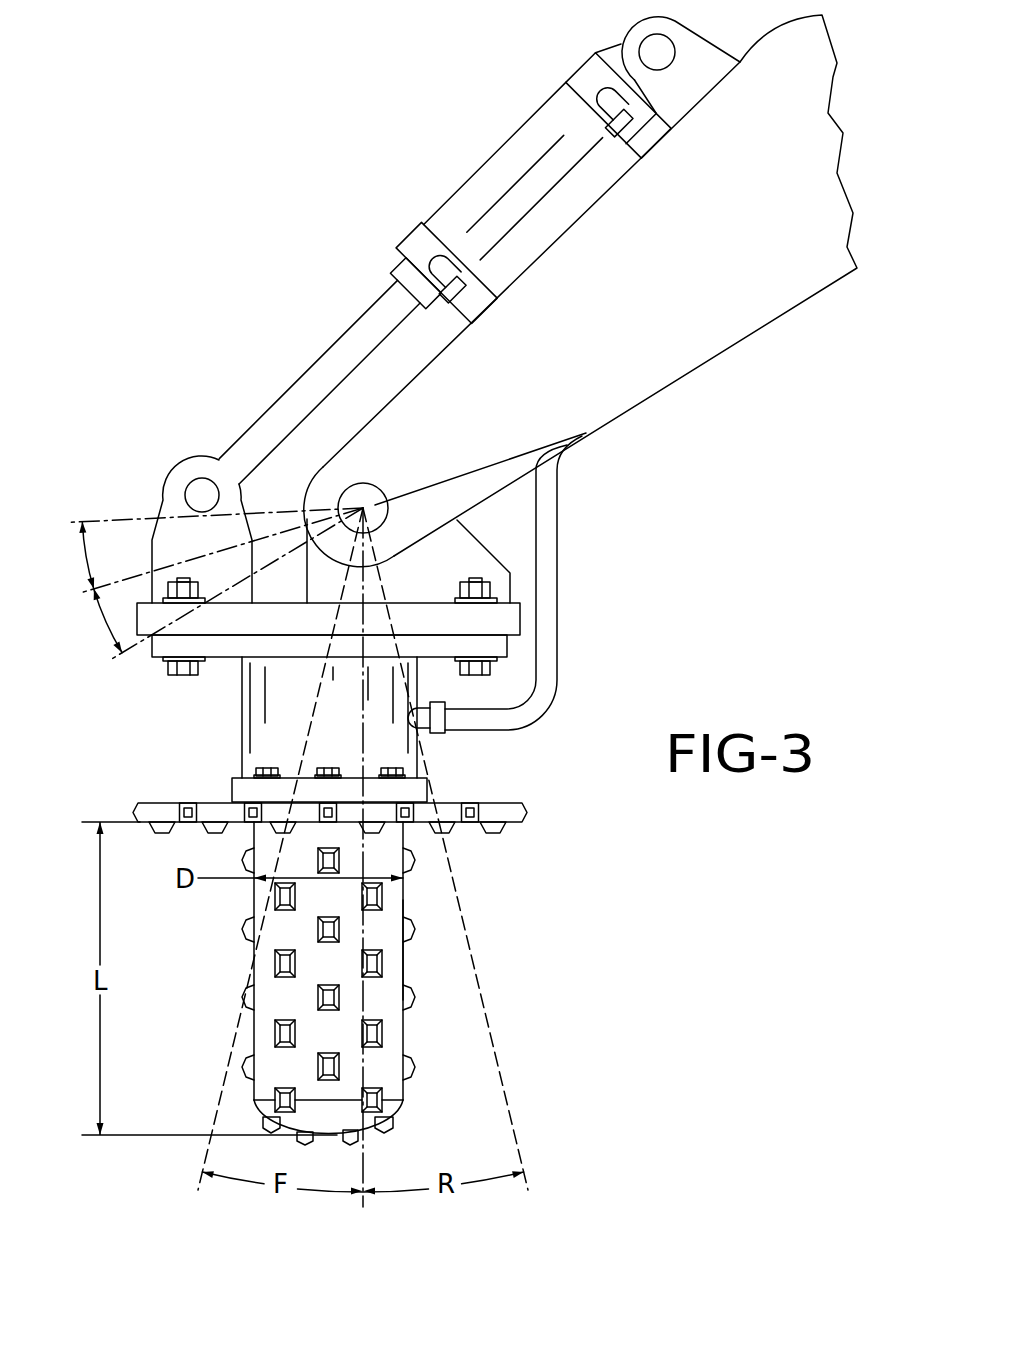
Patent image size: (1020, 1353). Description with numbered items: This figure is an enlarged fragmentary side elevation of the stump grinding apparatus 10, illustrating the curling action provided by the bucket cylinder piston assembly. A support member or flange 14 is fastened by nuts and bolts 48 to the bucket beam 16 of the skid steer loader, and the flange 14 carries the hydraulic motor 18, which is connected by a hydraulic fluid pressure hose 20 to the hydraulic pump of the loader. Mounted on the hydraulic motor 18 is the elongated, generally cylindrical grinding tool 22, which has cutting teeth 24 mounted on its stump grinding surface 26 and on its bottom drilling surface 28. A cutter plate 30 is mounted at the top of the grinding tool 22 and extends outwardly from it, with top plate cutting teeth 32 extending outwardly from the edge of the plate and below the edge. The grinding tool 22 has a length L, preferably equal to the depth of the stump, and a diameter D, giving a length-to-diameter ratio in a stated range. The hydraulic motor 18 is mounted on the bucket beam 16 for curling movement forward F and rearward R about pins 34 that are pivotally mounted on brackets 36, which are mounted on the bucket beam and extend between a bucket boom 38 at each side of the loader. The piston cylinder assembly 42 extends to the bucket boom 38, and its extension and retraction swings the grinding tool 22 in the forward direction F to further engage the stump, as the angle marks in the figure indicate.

The stump grinding apparatus 10 is at (158, 731).
The flange 14 is at (160, 652).
The bucket beam 16 is at (153, 615).
The hydraulic motor 18 is at (248, 750).
The hydraulic fluid pressure hose 20 is at (543, 695).
The grinding tool 22 is at (390, 1033).
The cutting teeth 24 is at (410, 928).
The stump grinding surface 26 is at (380, 995).
The bottom drilling surface 28 is at (303, 1117).
The cutter plate 30 is at (498, 803).
The top plate cutting teeth 32 is at (468, 805).
The pins 34 is at (375, 505).
The brackets 36 is at (443, 567).
The bucket boom 38 is at (680, 340).
The piston cylinder assembly 42 is at (473, 210).
The nuts and bolts 48 is at (178, 587).